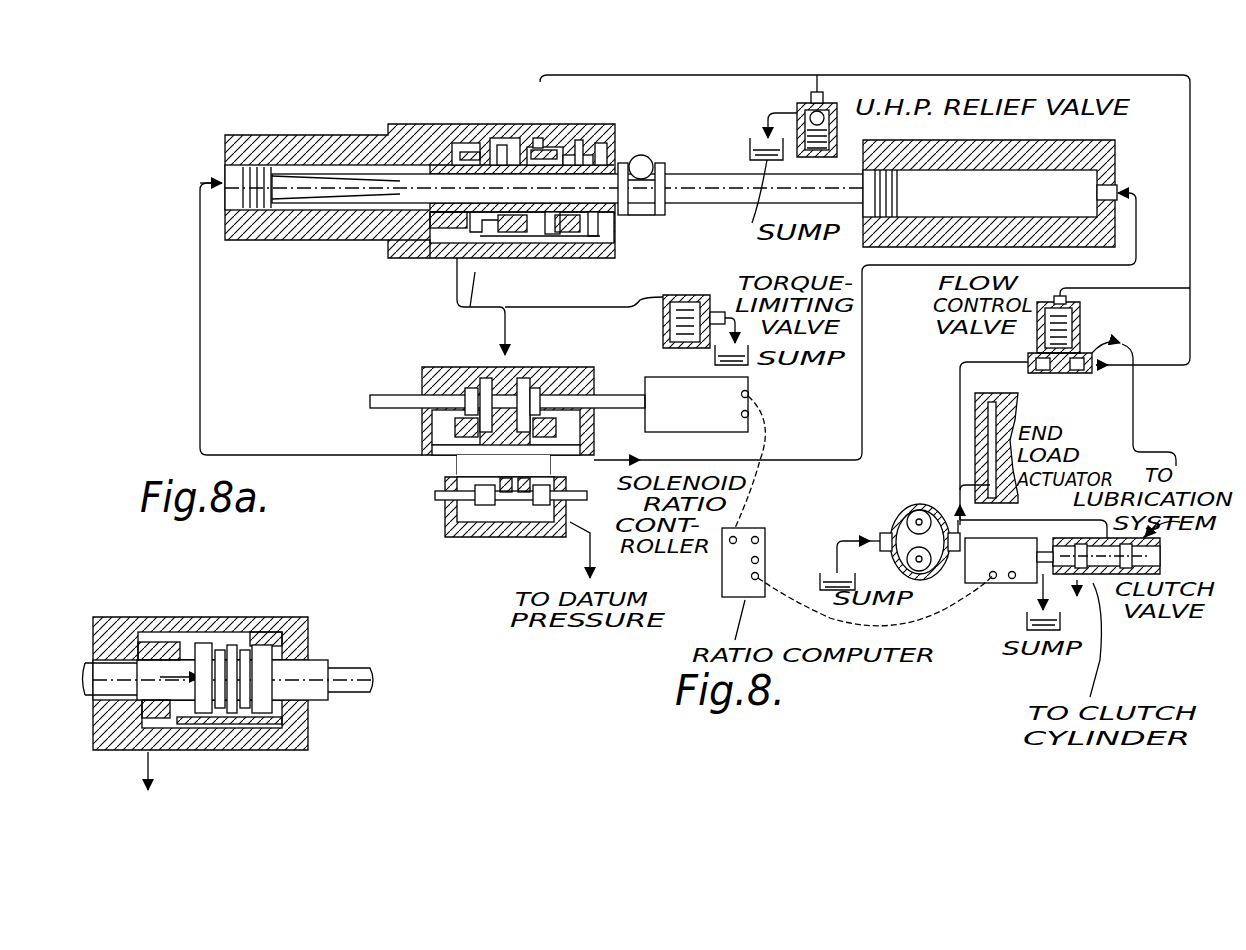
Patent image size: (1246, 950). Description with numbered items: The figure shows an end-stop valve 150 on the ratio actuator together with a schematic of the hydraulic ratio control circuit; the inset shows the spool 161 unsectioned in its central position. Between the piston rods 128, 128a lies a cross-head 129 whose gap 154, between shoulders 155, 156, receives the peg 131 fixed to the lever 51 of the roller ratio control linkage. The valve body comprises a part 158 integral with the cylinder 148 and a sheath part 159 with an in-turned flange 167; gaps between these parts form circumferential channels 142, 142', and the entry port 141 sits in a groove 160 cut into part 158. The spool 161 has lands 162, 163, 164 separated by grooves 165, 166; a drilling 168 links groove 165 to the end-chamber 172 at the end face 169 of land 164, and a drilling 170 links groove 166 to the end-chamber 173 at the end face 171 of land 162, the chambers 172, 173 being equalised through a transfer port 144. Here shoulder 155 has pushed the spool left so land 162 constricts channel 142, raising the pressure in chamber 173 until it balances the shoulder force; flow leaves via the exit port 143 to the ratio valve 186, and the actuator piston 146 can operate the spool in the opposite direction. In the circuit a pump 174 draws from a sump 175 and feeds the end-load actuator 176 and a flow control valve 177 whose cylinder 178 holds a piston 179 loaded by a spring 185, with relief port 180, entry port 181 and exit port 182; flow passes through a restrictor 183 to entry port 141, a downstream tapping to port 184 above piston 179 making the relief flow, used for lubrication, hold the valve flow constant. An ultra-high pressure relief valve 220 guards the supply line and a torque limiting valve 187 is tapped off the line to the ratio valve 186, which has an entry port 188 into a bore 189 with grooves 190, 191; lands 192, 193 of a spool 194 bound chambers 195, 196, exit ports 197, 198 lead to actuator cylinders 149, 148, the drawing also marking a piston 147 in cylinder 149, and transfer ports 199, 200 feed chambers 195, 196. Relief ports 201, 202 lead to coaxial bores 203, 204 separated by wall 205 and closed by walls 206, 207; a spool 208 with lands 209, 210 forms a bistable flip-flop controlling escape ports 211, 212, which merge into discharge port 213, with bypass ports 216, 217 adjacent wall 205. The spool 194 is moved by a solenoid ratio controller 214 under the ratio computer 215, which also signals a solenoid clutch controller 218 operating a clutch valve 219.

In FIG. 8, the actuator cylinder 148 is at (268, 147).
In FIG. 8, the actuator piston 146 is at (245, 196).
In FIG. 8, the piston rod 128 is at (275, 205).
In FIG. 8, the piston rod 128a is at (730, 194).
In FIG. 8, the end-chamber 173 is at (348, 212).
In FIG. 8A, the end-chamber 173 is at (183, 730).
In FIG. 8, the drilling 168 is at (505, 180).
In FIG. 8A, the drilling 168 is at (280, 665).
In FIG. 8, the circumferential channel 142 is at (414, 125).
In FIG. 8A, the circumferential channel 142 is at (163, 625).
In FIG. 8, the circumferential channel 142' is at (630, 121).
In FIG. 8, the land 162 is at (448, 138).
In FIG. 8A, the land 162 is at (192, 637).
In FIG. 8, the groove 165 is at (493, 143).
In FIG. 8A, the groove 165 is at (228, 735).
In FIG. 8, the entry port 141 is at (540, 128).
In FIG. 8A, the entry port 141 is at (233, 612).
In FIG. 8, the land 163 is at (533, 143).
In FIG. 8A, the land 163 is at (240, 637).
In FIG. 8, the sheath part 159 is at (549, 140).
In FIG. 8A, the sheath part 159 is at (107, 617).
In FIG. 8, the groove 166 is at (565, 145).
In FIG. 8A, the groove 166 is at (285, 730).
In FIG. 8, the valve body part 158 is at (643, 156).
In FIG. 8, the lever 51 is at (643, 160).
In FIG. 8, the peg 131 is at (652, 158).
In FIG. 8, the cross-head 129 is at (672, 168).
In FIG. 8, the sump 175 is at (744, 140).
In FIG. 8, the ultra-high pressure relief valve 220 is at (838, 122).
In FIG. 8, the piston 147 is at (900, 185).
In FIG. 8, the actuator cylinder 149 is at (1007, 150).
In FIG. 8, the shoulder 156 is at (652, 216).
In FIG. 8, the shoulder 155 is at (632, 222).
In FIG. 8, the gap 154 is at (652, 217).
In FIG. 8, the exit port 143 is at (455, 258).
In FIG. 8A, the exit port 143 is at (150, 742).
In FIG. 8, the drilling 170 is at (500, 253).
In FIG. 8A, the drilling 170 is at (190, 740).
In FIG. 8, the transfer port 144 is at (455, 274).
In FIG. 8A, the transfer port 144 is at (277, 743).
In FIG. 8, the groove 160 is at (565, 250).
In FIG. 8A, the groove 160 is at (258, 727).
In FIG. 8, the end-chamber 172 is at (593, 250).
In FIG. 8A, the end-chamber 172 is at (307, 720).
In FIG. 8, the land 164 is at (583, 240).
In FIG. 8A, the land 164 is at (262, 637).
In FIG. 8, the in-turned flange 167 is at (627, 238).
In FIG. 8A, the in-turned flange 167 is at (307, 712).
In FIG. 8, the end-stop valve 150 is at (481, 329).
In FIG. 8, the torque limiting valve 187 is at (661, 322).
In FIG. 8, the port 184 is at (1055, 302).
In FIG. 8, the spring 185 is at (1080, 303).
In FIG. 8, the flow control valve 177 is at (1088, 333).
In FIG. 8, the cylinder 178 is at (1037, 334).
In FIG. 8, the piston 179 is at (1040, 352).
In FIG. 8, the relief port 180 is at (1140, 402).
In FIG. 8, the entry port 181 is at (1028, 370).
In FIG. 8, the exit port 182 is at (1082, 365).
In FIG. 8, the restrictor 183 is at (1192, 320).
In FIG. 8, the ratio valve 186 is at (418, 364).
In FIG. 8, the groove 191 is at (470, 393).
In FIG. 8, the bore 189 is at (500, 385).
In FIG. 8, the entry port 188 is at (622, 247).
In FIG. 8, the groove 190 is at (613, 247).
In FIG. 8, the land 192 is at (580, 378).
In FIG. 8, the spool 194 is at (640, 395).
In FIG. 8, the chamber 195 is at (585, 400).
In FIG. 8, the land 193 is at (445, 398).
In FIG. 8, the chamber 196 is at (370, 399).
In FIG. 8, the transfer port 200 is at (455, 427).
In FIG. 8, the exit port 198 is at (487, 448).
In FIG. 8, the exit port 197 is at (647, 425).
In FIG. 8, the transfer port 199 is at (560, 445).
In FIG. 8, the solenoid ratio controller 214 is at (750, 383).
In FIG. 8, the bypass port 216 is at (573, 458).
In FIG. 8, the relief port 202 is at (423, 472).
In FIG. 8, the wall 207 is at (452, 481).
In FIG. 8, the bore 204 is at (443, 498).
In FIG. 8, the land 210 is at (530, 497).
In FIG. 8, the escape port 212 is at (507, 520).
In FIG. 8, the bypass port 217 is at (520, 512).
In FIG. 8, the wall 205 is at (528, 512).
In FIG. 8, the spool 208 is at (535, 515).
In FIG. 8, the escape port 211 is at (540, 520).
In FIG. 8, the bore 203 is at (545, 525).
In FIG. 8, the land 209 is at (542, 537).
In FIG. 8, the discharge port 213 is at (555, 530).
In FIG. 8, the wall 206 is at (567, 522).
In FIG. 8, the relief port 201 is at (568, 480).
In FIG. 8, the electronic ratio computer 215 is at (772, 545).
In FIG. 8, the positive displacement pump 174 is at (948, 476).
In FIG. 8, the end-load actuator 176 is at (1020, 478).
In FIG. 8, the solenoid clutch controller 218 is at (1008, 583).
In FIG. 8, the clutch valve 219 is at (1158, 566).
In FIG. 8A, the spool 161 is at (100, 673).
In FIG. 8A, the left hand annular end face 171 is at (178, 632).
In FIG. 8A, the annular right hand end face 169 is at (307, 632).